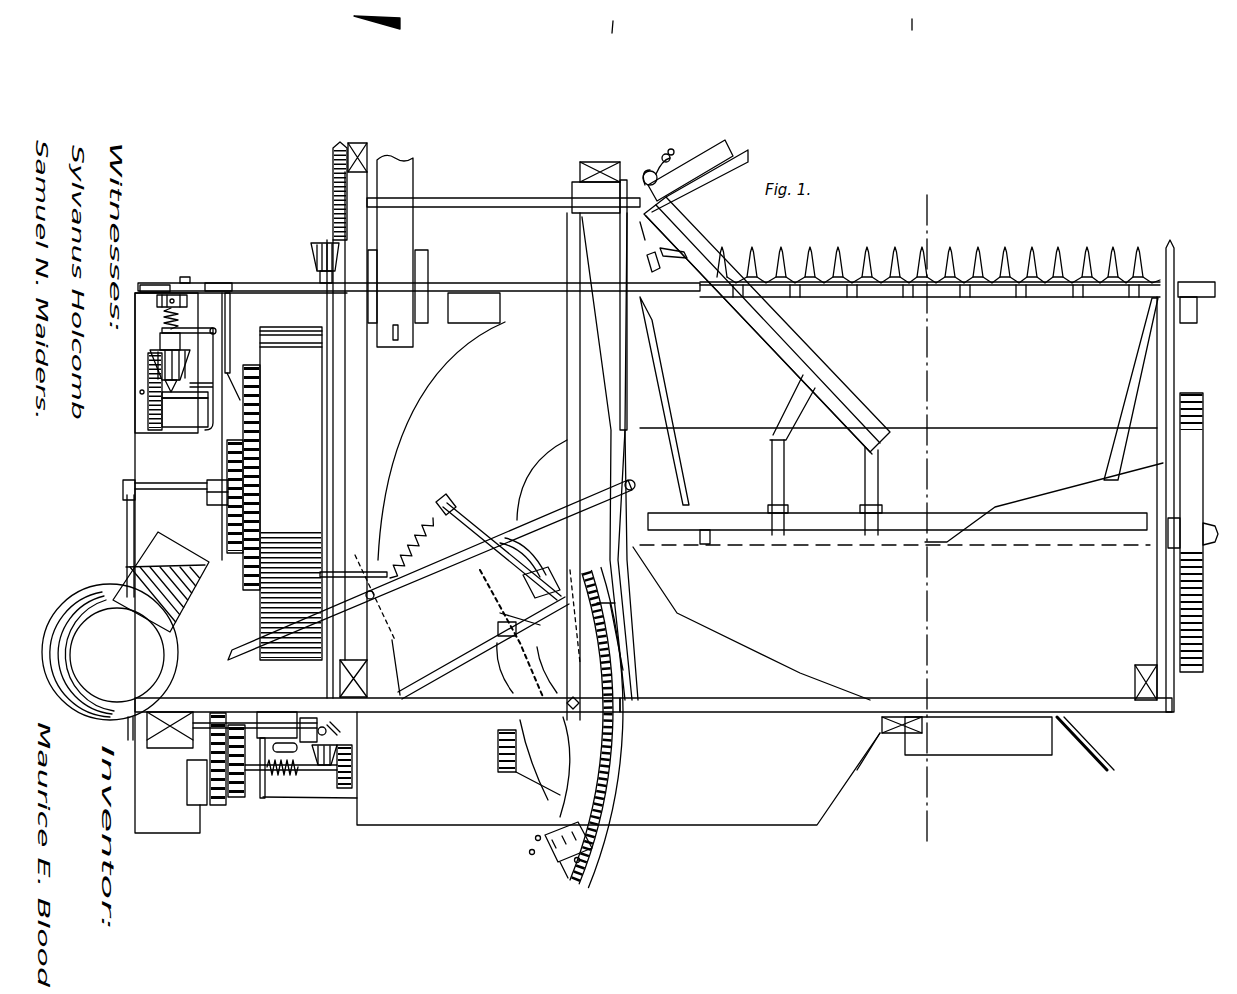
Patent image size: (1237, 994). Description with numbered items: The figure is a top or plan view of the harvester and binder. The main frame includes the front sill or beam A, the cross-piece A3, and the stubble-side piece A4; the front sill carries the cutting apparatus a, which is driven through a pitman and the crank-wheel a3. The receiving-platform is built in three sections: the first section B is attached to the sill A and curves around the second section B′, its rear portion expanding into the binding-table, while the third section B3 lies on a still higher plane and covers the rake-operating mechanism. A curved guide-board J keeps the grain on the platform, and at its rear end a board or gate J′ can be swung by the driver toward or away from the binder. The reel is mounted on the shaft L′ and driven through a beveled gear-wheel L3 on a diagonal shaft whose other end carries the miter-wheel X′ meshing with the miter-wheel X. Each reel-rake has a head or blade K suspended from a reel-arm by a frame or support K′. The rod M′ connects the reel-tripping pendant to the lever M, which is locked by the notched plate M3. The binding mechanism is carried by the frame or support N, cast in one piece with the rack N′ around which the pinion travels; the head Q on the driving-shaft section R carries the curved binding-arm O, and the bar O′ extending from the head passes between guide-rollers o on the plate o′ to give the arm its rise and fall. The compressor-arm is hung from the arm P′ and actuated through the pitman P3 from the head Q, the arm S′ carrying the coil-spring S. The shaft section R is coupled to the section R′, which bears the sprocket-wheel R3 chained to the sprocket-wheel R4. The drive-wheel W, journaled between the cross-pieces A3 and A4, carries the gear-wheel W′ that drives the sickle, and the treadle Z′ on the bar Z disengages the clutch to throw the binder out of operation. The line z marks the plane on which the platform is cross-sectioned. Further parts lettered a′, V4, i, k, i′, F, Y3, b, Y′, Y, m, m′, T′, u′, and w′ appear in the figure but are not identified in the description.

The front sill or beam A is at (1205, 312).
The crank-wheel a3 is at (186, 280).
The cutting apparatus a is at (930, 272).
The spike bar end bracket a′ is at (1079, 279).
The front upright post V4 is at (532, 412).
The cross-piece A3 is at (333, 428).
The beveled gear-wheel L3 is at (312, 252).
The reel shaft L′ is at (470, 188).
The notched plate M3 is at (591, 466).
The rod M′ is at (598, 333).
The curved guide-board J is at (472, 441).
The cutter board i is at (702, 248).
The cutter lever k is at (646, 265).
The cutter block i′ is at (667, 237).
The deflector blade F is at (678, 392).
The first platform section B is at (806, 497).
The section line z is at (925, 521).
The frame or support K′ is at (824, 455).
The head or blade K is at (1040, 503).
The second platform section B′ is at (895, 508).
The third platform section B3 is at (787, 623).
The rail bracket Y3 is at (905, 720).
The brace b is at (1085, 742).
The rail and driving block Y′ is at (182, 548).
The pulley and lower rail Y is at (331, 652).
The lever M is at (431, 570).
The arm S′ is at (385, 605).
The coil-spring S is at (400, 548).
The arm P′ is at (437, 498).
The link or bar P3 is at (470, 512).
The driving-shaft section R is at (483, 648).
The board or gate J′ is at (402, 667).
The chain m is at (508, 633).
The chain link m′ is at (520, 613).
The binding-arm O is at (523, 557).
The head or block Q is at (541, 578).
The toothed sector T′ is at (529, 721).
The link u′ is at (530, 668).
The frame or support N is at (624, 803).
The rack N′ is at (628, 742).
The bar or rod O′ is at (571, 767).
The guide-rollers o is at (557, 842).
The plate or head o′ is at (575, 865).
The drive-wheel W is at (291, 493).
The gear-wheel W′ is at (237, 477).
The pinion w′ is at (234, 426).
The stubble-side piece A4 is at (175, 413).
The bar Z is at (155, 610).
The treadle Z′ is at (207, 485).
The driving-shaft section R′ is at (232, 727).
The sprocket-wheel R3 is at (186, 747).
The sprocket-wheel R4 is at (218, 808).
The miter-wheel X is at (354, 788).
The miter-wheel X′ is at (352, 762).